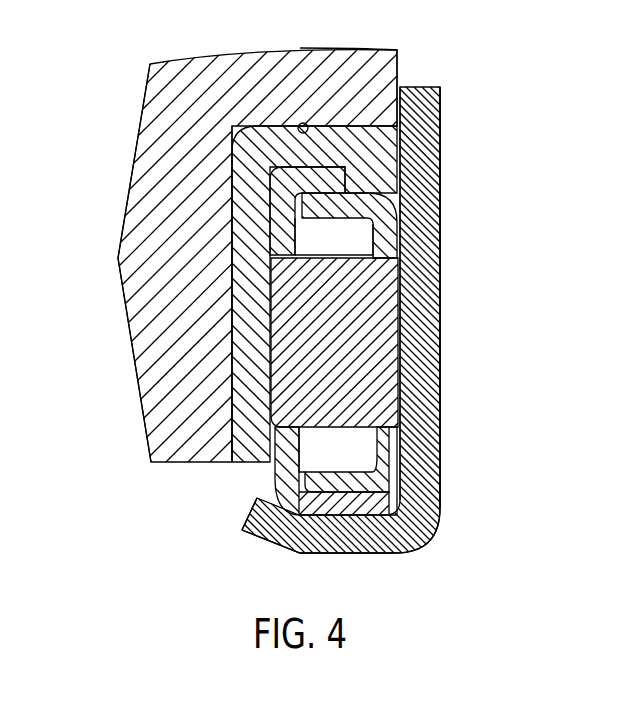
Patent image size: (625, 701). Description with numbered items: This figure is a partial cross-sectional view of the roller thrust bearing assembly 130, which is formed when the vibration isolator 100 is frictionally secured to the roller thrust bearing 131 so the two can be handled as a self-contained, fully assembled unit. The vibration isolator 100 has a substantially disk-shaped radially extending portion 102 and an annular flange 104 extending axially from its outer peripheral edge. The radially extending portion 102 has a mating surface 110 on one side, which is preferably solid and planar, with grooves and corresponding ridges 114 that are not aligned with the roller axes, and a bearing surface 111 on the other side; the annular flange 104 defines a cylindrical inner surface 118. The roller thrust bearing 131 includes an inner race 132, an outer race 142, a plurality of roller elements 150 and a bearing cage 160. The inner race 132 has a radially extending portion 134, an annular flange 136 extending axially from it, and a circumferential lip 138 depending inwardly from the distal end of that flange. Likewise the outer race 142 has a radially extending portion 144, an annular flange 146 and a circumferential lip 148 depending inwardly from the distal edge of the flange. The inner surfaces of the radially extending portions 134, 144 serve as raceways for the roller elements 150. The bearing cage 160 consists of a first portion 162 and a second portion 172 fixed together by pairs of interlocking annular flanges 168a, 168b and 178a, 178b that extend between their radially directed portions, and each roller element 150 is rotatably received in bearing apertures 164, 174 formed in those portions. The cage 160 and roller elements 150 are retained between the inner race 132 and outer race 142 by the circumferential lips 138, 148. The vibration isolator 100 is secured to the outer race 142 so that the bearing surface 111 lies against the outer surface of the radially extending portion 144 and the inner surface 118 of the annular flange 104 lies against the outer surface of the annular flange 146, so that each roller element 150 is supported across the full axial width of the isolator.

The vibration isolator 100 is at (112, 76).
The radially extending portion 102 is at (187, 463).
The annular flange 104 is at (400, 62).
The mating surface 110 is at (137, 367).
The bearing surface 111 is at (231, 379).
The ridge 114 is at (120, 258).
The inner surface 118 is at (388, 184).
The roller thrust bearing assembly 130 is at (115, 538).
The roller thrust bearing 131 is at (502, 462).
The inner race 132 is at (363, 349).
The radially extending portion 134 is at (440, 197).
The annular flange 136 is at (368, 553).
The circumferential lip 138 is at (255, 503).
The outer race 142 is at (218, 268).
The radially extending portion 144 is at (233, 315).
The annular flange 146 is at (355, 128).
The circumferential lip 148 is at (440, 237).
The roller element 150 is at (388, 328).
The bearing cage 160 is at (342, 296).
The first portion 162 is at (254, 128).
The bearing aperture 164 is at (284, 262).
The interlocking annular flange 168a is at (347, 178).
The interlocking annular flange 168b is at (392, 510).
The second portion 172 is at (398, 472).
The bearing aperture 174 is at (376, 430).
The interlocking annular flange 178a is at (337, 475).
The interlocking annular flange 178b is at (378, 210).